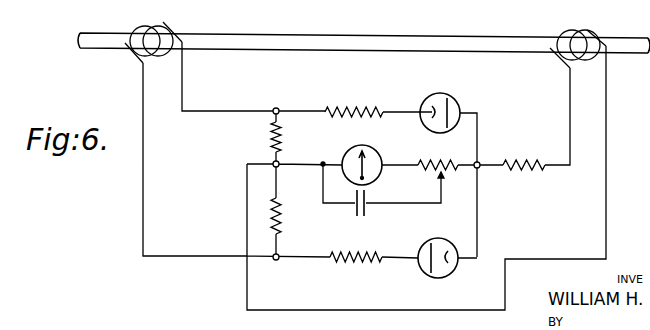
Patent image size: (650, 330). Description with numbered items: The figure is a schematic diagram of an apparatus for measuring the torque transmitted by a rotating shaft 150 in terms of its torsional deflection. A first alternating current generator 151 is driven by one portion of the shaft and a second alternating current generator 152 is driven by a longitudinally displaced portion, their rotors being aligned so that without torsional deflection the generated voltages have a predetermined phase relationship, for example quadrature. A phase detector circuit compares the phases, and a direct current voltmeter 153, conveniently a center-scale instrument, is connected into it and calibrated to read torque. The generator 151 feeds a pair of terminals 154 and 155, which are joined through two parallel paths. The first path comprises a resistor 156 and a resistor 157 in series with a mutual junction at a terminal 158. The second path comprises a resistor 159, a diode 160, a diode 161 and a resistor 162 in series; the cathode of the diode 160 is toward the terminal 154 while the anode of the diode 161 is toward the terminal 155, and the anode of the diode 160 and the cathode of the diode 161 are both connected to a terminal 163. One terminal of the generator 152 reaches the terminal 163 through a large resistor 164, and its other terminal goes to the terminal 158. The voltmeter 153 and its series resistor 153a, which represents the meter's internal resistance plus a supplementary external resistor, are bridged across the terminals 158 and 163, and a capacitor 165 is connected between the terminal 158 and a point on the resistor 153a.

The rotating shaft 150 is at (405, 35).
The first alternating current generator 151 is at (148, 27).
The second alternating current generator 152 is at (578, 31).
The direct current voltmeter 153 is at (352, 149).
The series resistor 153a is at (435, 158).
The terminal 154 is at (278, 108).
The terminal 155 is at (277, 260).
The resistor 156 is at (270, 140).
The resistor 157 is at (282, 220).
The terminal 158 is at (278, 167).
The resistor 159 is at (361, 108).
The diode 160 is at (448, 95).
The diode 161 is at (447, 272).
The resistor 162 is at (357, 262).
The terminal 163 is at (480, 162).
The large resistor 164 is at (525, 172).
The capacitor 165 is at (357, 213).